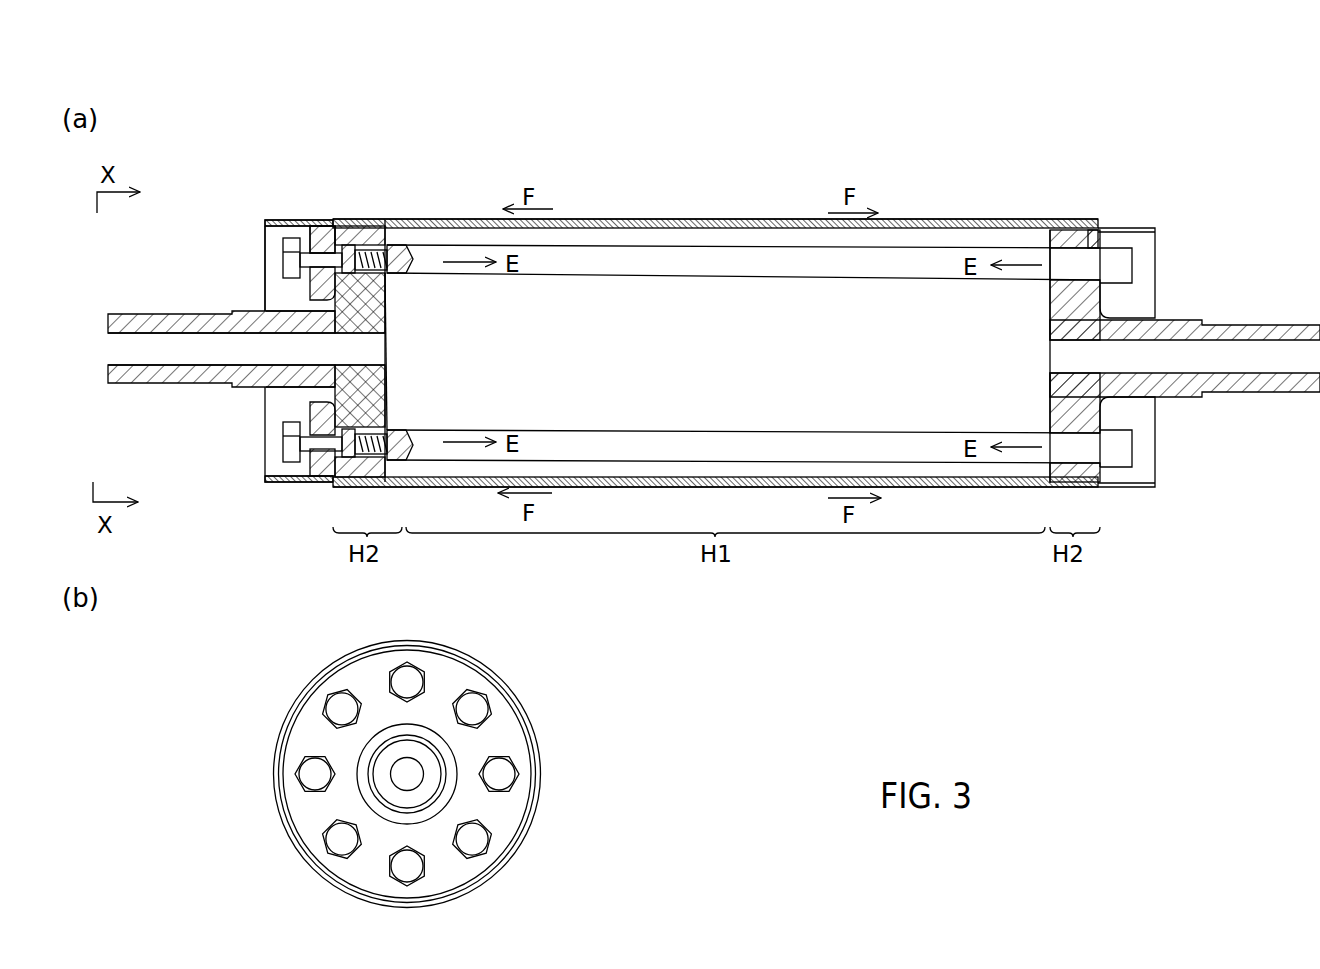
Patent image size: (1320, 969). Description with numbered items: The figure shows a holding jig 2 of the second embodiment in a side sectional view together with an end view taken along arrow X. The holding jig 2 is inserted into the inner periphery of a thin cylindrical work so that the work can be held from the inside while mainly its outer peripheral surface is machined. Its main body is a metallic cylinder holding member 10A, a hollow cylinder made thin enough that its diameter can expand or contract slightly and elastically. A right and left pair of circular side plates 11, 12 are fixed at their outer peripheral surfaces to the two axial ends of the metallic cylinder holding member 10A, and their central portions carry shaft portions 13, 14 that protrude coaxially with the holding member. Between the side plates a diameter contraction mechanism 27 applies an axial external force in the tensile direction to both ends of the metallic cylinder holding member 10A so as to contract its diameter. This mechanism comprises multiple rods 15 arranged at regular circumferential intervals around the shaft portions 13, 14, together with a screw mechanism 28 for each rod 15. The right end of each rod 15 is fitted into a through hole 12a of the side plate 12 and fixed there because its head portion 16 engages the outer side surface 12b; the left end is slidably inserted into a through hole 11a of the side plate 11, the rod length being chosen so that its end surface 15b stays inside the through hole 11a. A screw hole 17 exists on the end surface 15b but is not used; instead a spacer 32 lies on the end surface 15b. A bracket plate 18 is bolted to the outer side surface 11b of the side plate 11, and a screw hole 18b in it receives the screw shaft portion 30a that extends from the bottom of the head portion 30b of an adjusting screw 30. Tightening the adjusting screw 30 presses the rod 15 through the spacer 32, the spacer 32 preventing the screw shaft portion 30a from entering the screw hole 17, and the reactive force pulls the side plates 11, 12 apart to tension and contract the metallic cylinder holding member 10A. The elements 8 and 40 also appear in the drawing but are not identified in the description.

The holding jig 2 is at (1073, 206).
The end plate 8 is at (508, 732).
The metallic cylinder holding member 10A is at (910, 226).
The side plate 11 is at (385, 222).
The through hole 11a is at (397, 277).
The outer side surface 11b is at (385, 352).
The side plate 12 is at (1062, 240).
The through hole 12a is at (1050, 270).
The outer side surface 12b is at (1105, 298).
The shaft portion 13 is at (218, 384).
The shaft portion 14 is at (1238, 395).
The rod 15 is at (745, 247).
The end surface 15b is at (388, 300).
The head portion 16 is at (1130, 257).
The screw hole 17 is at (402, 222).
The bracket plate 18 is at (317, 221).
The screw hole 18b is at (306, 221).
The diameter contraction mechanism 27 is at (621, 238).
The screw mechanism 28 is at (265, 280).
The adjusting screw 30 is at (278, 258).
The screw shaft portion 30a is at (378, 324).
The head portion 30b is at (283, 252).
The spacer 32 is at (362, 221).
The washer 40 is at (340, 221).